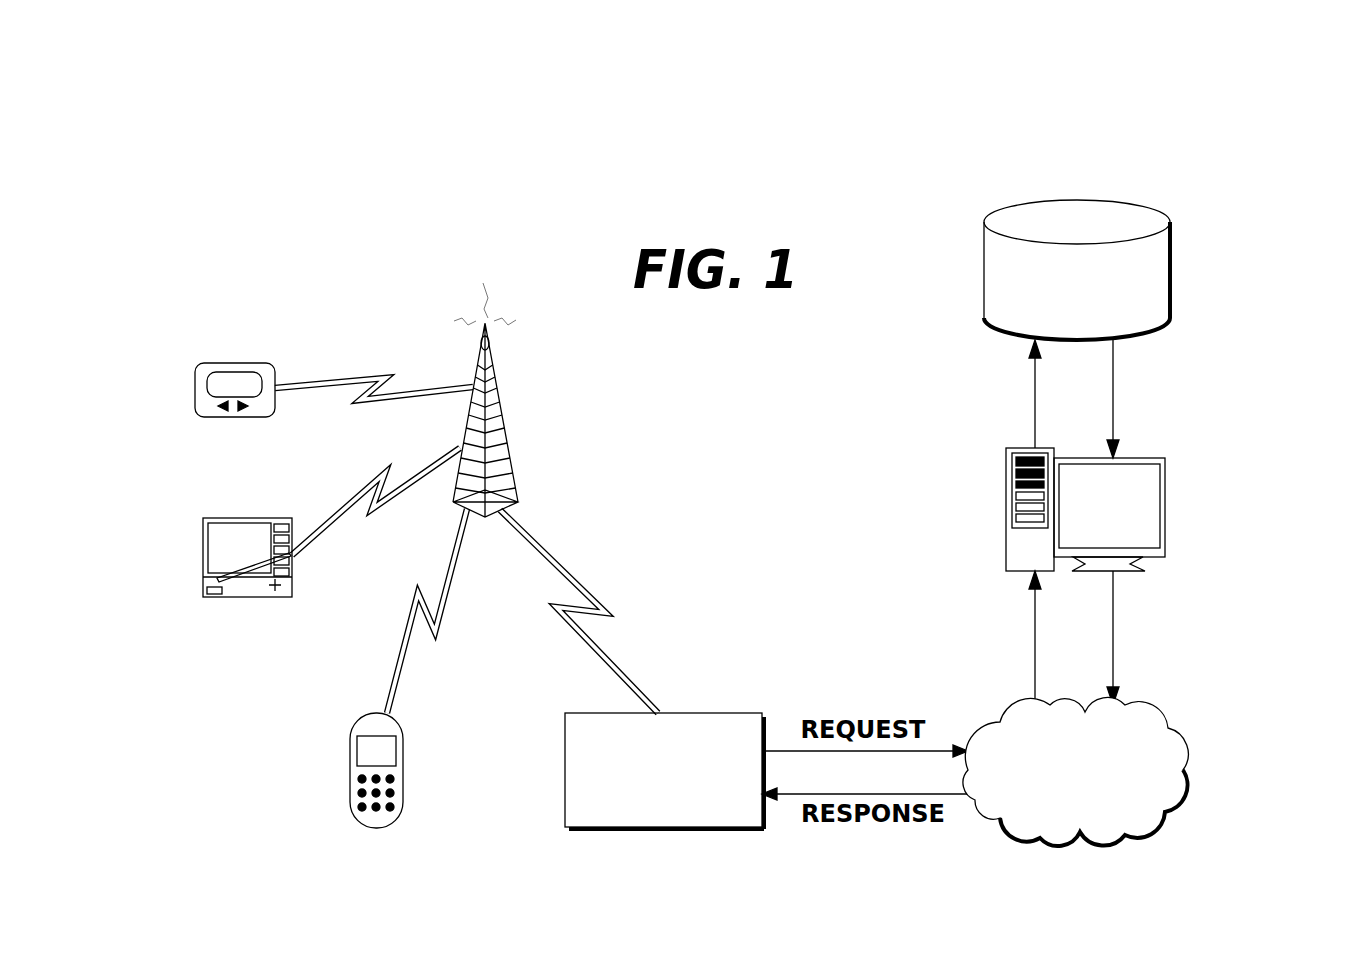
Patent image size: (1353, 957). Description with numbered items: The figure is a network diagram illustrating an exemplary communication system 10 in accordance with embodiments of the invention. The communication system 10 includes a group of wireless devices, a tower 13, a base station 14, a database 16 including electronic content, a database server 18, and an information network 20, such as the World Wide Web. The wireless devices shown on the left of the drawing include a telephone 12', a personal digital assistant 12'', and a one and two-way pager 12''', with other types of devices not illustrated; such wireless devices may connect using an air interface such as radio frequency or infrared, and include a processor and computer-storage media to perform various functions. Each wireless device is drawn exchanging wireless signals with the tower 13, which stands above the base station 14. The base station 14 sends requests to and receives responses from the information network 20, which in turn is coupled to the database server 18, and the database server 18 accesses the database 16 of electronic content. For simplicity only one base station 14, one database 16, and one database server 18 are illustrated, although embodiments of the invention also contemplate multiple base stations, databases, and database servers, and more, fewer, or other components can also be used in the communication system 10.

The communication system 10 is at (1268, 146).
The telephone 12' is at (359, 770).
The personal digital assistant 12'' is at (228, 557).
The one and two-way pager 12''' is at (214, 404).
The tower 13 is at (508, 437).
The base station 14 is at (565, 771).
The database 16 is at (1172, 262).
The database server 18 is at (1006, 498).
The information network 20 is at (1183, 778).